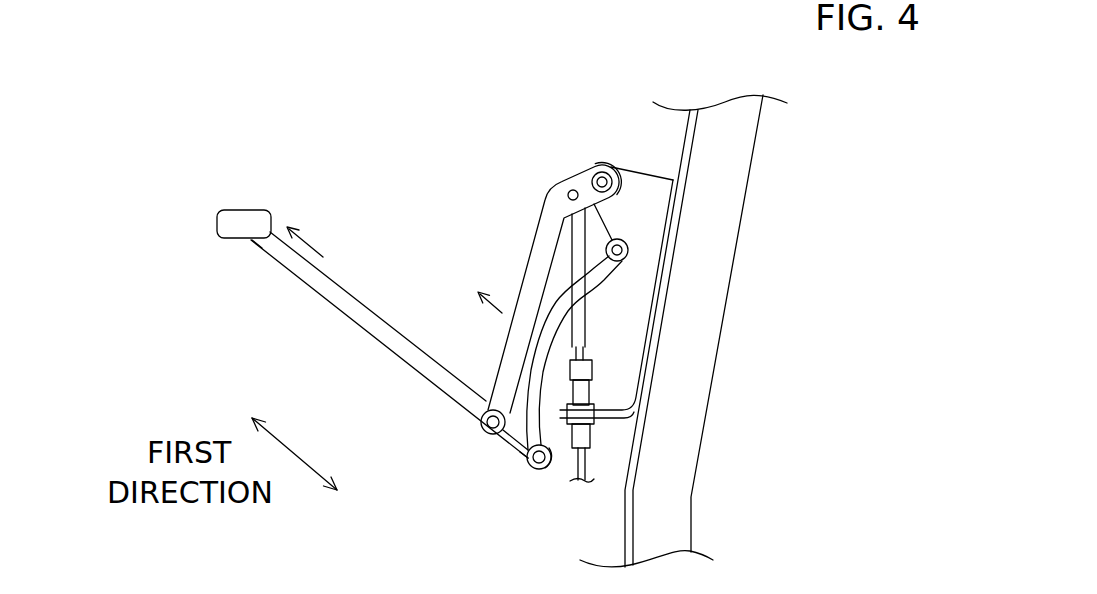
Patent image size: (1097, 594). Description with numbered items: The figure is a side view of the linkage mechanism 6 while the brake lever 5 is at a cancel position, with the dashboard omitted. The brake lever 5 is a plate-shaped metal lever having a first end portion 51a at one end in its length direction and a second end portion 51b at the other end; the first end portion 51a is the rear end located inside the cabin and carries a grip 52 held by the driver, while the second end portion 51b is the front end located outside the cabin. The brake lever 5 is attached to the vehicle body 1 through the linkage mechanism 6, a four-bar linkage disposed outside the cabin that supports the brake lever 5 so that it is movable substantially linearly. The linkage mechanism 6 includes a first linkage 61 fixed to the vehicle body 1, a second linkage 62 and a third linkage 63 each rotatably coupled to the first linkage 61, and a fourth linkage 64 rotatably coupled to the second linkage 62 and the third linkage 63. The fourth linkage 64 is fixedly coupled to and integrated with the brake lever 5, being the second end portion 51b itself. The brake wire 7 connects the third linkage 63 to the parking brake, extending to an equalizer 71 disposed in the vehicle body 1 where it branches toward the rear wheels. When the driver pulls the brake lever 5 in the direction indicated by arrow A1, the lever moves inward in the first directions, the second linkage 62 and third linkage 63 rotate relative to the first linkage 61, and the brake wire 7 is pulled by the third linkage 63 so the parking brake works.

The vehicle body 1 is at (737, 253).
The brake lever 5 is at (390, 349).
The first end portion 51a is at (252, 241).
The second end portion 51b is at (524, 462).
The grip 52 is at (246, 210).
The linkage mechanism 6 is at (514, 298).
The first linkage 61 is at (650, 173).
The second linkage 62 is at (563, 440).
The third linkage 63 is at (492, 368).
The fourth linkage 64 is at (510, 447).
The brake wire 7 is at (565, 254).
The equalizer 71 is at (587, 330).
The pulling direction arrow A1 is at (313, 236).